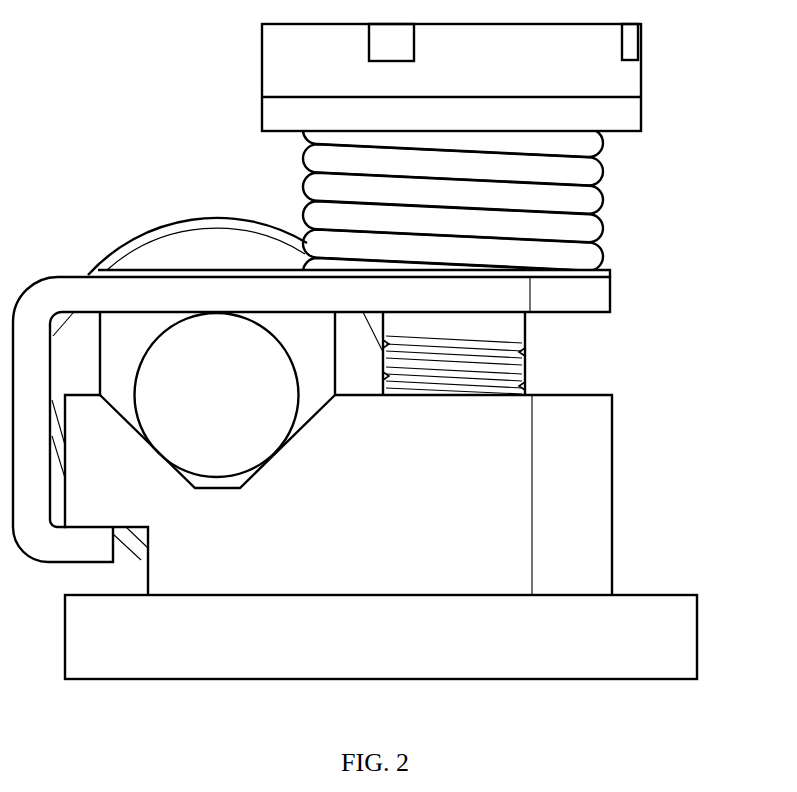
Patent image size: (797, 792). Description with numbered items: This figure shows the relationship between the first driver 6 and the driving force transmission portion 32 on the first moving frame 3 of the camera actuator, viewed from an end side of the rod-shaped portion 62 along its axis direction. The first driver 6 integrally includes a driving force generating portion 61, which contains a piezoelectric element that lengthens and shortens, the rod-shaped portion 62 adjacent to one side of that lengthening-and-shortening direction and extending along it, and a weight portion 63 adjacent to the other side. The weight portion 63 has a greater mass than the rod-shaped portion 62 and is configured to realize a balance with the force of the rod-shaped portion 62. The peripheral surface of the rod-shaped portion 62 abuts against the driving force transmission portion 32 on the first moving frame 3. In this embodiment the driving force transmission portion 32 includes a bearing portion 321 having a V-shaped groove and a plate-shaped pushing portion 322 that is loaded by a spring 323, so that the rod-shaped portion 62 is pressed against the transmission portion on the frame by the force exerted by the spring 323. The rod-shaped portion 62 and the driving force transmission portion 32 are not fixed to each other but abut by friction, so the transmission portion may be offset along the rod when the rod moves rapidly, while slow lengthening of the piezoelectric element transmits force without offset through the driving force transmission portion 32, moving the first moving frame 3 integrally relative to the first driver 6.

The first moving frame 3 is at (638, 470).
The driving force transmission portion 32 is at (386, 425).
The bearing portion 321 is at (350, 530).
The plate-shaped pushing portion 322 is at (84, 287).
The spring 323 is at (602, 201).
The first driver 6 is at (277, 161).
The driving force generating portion 61 is at (137, 323).
The rod-shaped portion 62 is at (212, 330).
The weight portion 63 is at (242, 240).